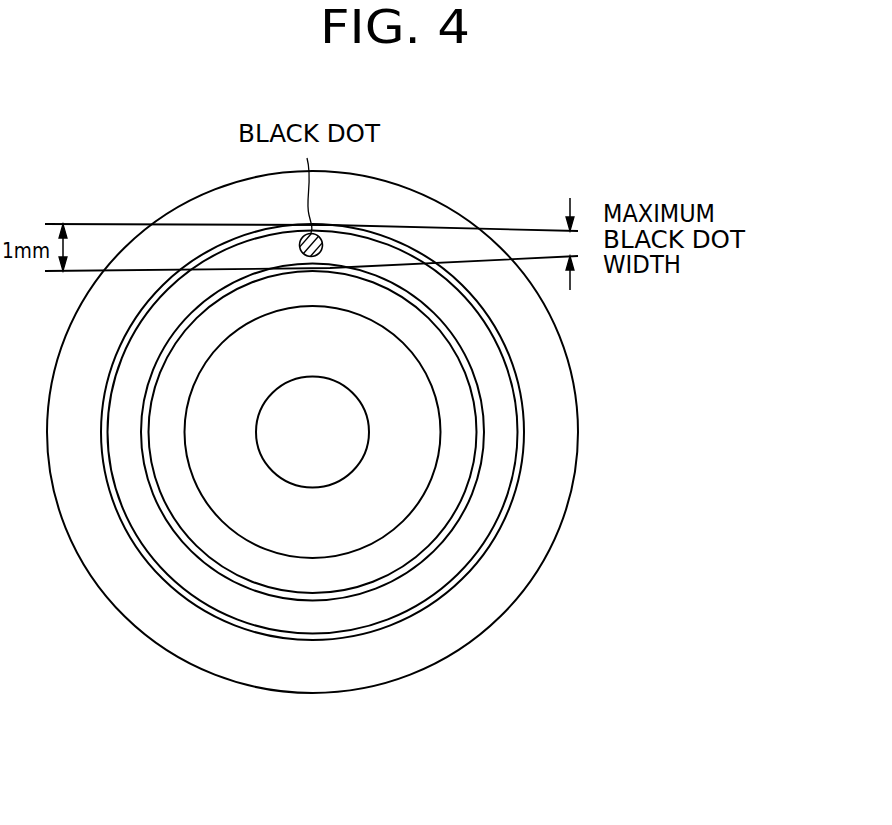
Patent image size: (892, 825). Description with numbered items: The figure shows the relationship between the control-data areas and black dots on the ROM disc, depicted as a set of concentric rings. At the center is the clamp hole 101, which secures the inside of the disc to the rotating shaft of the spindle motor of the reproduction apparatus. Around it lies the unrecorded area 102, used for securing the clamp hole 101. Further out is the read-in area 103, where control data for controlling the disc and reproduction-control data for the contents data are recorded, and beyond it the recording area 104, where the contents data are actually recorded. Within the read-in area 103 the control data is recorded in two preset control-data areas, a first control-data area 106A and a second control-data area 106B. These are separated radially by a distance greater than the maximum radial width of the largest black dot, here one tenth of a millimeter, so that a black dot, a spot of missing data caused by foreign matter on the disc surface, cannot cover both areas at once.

The clamp hole 101 is at (287, 398).
The unrecorded area 102 is at (403, 490).
The read-in area 103 is at (442, 637).
The recording area 104 is at (650, 387).
The first control-data area 106A is at (363, 593).
The second control-data area 106B is at (239, 628).